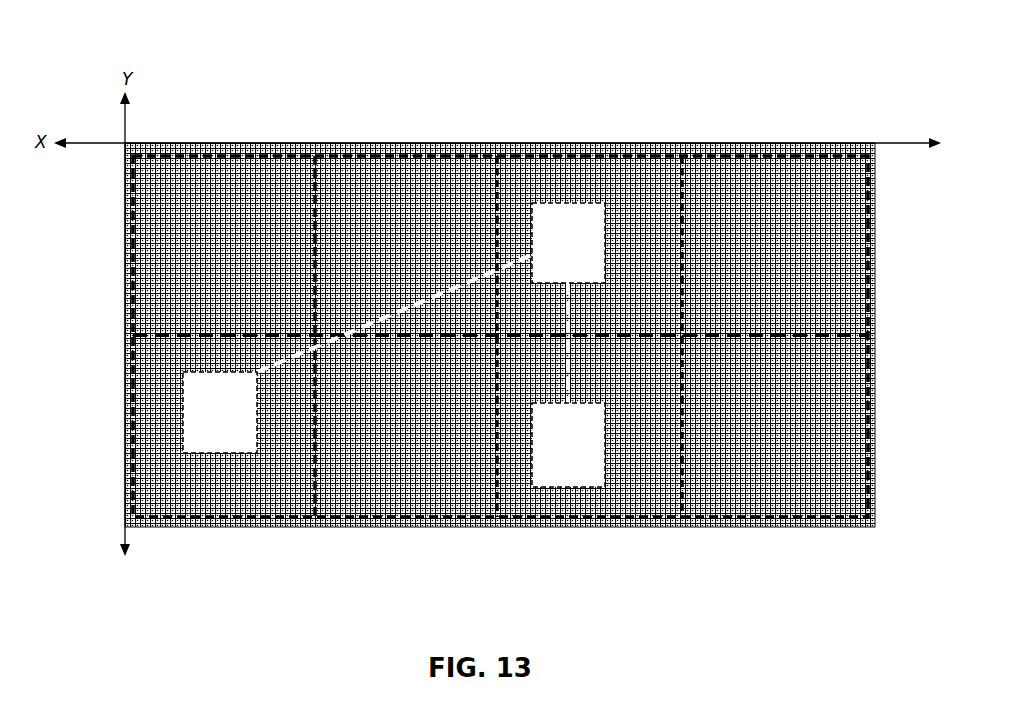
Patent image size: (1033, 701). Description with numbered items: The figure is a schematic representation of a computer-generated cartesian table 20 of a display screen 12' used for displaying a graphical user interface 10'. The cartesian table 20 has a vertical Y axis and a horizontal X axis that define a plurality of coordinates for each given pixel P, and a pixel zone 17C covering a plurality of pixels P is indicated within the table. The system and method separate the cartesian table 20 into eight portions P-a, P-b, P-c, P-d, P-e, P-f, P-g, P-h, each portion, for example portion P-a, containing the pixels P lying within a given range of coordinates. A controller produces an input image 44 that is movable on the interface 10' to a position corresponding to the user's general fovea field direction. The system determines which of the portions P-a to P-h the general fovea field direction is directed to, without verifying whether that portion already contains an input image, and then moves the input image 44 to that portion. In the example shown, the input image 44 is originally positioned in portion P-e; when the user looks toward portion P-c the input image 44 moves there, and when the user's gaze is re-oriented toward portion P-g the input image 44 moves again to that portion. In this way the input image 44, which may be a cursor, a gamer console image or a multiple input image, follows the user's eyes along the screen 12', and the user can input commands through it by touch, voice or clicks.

The cartesian table 20 is at (86, 264).
The graphical user interface 10' is at (532, 348).
The display screen 12' is at (541, 336).
The input image 44 is at (394, 345).
The pixel zone 17C is at (707, 466).
The pixel P is at (273, 180).
The portion P-a is at (215, 220).
The portion P-b is at (370, 215).
The portion P-c is at (600, 210).
The portion P-d is at (775, 215).
The portion P-e is at (224, 490).
The portion P-f is at (377, 462).
The portion P-g is at (625, 497).
The portion P-h is at (782, 448).